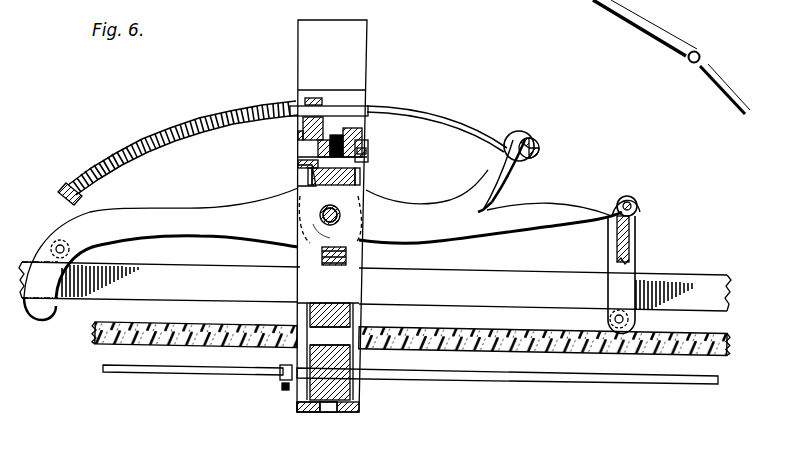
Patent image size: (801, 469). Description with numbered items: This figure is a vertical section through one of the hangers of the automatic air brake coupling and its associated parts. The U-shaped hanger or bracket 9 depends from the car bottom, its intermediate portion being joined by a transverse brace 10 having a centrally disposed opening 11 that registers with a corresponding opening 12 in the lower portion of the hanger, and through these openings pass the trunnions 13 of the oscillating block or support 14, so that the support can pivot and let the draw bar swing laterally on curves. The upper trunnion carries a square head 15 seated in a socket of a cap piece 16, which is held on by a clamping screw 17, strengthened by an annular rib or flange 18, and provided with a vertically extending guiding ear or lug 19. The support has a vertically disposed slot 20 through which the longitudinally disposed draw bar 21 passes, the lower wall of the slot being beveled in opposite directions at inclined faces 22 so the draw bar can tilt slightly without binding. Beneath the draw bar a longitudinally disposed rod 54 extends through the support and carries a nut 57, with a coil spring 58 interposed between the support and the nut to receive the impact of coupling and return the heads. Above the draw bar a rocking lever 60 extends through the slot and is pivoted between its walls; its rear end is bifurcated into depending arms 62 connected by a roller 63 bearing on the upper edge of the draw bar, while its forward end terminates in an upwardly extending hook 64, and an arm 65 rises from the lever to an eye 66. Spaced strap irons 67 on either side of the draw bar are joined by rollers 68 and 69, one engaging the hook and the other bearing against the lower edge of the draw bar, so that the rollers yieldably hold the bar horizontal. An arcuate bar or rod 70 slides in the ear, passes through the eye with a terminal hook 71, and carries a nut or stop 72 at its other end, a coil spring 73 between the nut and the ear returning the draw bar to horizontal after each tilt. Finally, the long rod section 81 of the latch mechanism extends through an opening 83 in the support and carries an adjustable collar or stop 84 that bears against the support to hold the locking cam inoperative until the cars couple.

The hanger or bracket 9 is at (324, 36).
The transverse brace 10 is at (297, 164).
The centrally disposed opening 11 is at (360, 172).
The opening 12 is at (328, 412).
The trunnions 13 is at (297, 162).
The oscillating block or support 14 is at (300, 410).
The square head 15 is at (350, 134).
The cap piece 16 is at (304, 128).
The clamping screw 17 is at (368, 148).
The annular rib or flange 18 is at (360, 130).
The guiding ear or lug 19 is at (320, 99).
The vertically disposed slot 20 is at (348, 254).
The draw bar 21 is at (686, 277).
The inclined or beveled faces 22 is at (318, 310).
The longitudinally disposed rod 54 is at (100, 342).
The nut 57 is at (538, 338).
The coil spring 58 is at (196, 330).
The rocking lever 60 is at (190, 213).
The depending arms 62 is at (44, 318).
The roller 63 is at (64, 246).
The upwardly extending hook 64 is at (643, 210).
The arm 65 is at (512, 183).
The eye 66 is at (520, 132).
The strap irons 67 is at (636, 242).
The roller 68 is at (626, 196).
The roller 69 is at (612, 318).
The arcuate bar or rod 70 is at (216, 120).
The terminal hook 71 is at (541, 142).
The nut or stop 72 is at (62, 192).
The coil spring 73 is at (146, 140).
The long rod section 81 is at (462, 384).
The opening 83 is at (296, 396).
The adjustable collar or stop 84 is at (280, 378).